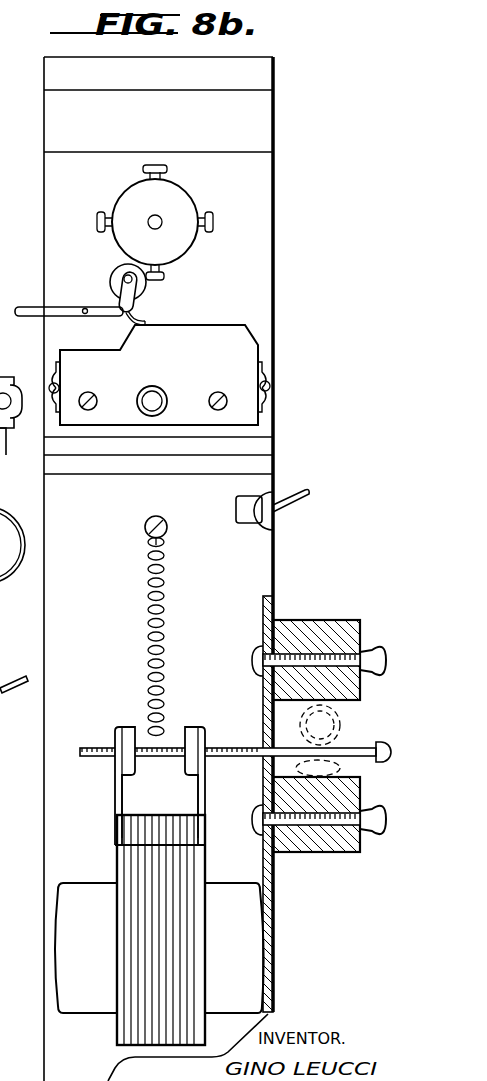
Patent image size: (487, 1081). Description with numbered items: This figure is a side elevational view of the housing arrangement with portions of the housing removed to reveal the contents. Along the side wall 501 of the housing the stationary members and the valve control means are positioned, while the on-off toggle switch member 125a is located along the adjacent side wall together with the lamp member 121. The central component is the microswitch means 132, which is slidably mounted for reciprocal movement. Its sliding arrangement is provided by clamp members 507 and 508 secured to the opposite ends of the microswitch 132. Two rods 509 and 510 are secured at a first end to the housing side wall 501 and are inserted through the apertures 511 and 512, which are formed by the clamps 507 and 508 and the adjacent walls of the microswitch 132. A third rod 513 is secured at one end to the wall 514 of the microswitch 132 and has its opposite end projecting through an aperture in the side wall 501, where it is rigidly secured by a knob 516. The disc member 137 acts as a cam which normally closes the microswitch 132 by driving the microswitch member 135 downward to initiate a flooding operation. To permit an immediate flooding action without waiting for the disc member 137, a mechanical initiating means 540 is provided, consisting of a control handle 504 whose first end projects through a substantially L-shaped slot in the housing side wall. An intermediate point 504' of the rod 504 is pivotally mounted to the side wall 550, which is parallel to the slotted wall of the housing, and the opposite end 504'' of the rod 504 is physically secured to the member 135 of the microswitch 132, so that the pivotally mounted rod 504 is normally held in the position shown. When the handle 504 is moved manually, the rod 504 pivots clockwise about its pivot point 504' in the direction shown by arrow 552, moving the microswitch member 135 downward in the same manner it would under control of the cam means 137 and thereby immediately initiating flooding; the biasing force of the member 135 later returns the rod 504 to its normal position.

The disc member 137 is at (190, 198).
The mechanical initiating means 540 is at (50, 306).
The arrow 552 is at (97, 287).
The control handle 504 is at (63, 298).
The intermediate point 504' is at (70, 326).
The opposite end of rod 504'' is at (121, 326).
The microswitch member 135 is at (138, 324).
The microswitch means 132 is at (186, 348).
The side wall 550 is at (256, 292).
The wall of microswitch 514 is at (180, 367).
The rod 509 is at (64, 396).
The third rod 513 is at (167, 394).
The clamp member 508 is at (272, 367).
The rod 510 is at (272, 387).
The aperture 512 is at (272, 391).
The side wall of housing 501 is at (2, 362).
The clamp member 507 is at (57, 373).
The aperture 511 is at (47, 400).
The knob 516 is at (5, 446).
The lamp member 121 is at (2, 590).
The on-off toggle switch member 125a is at (6, 692).